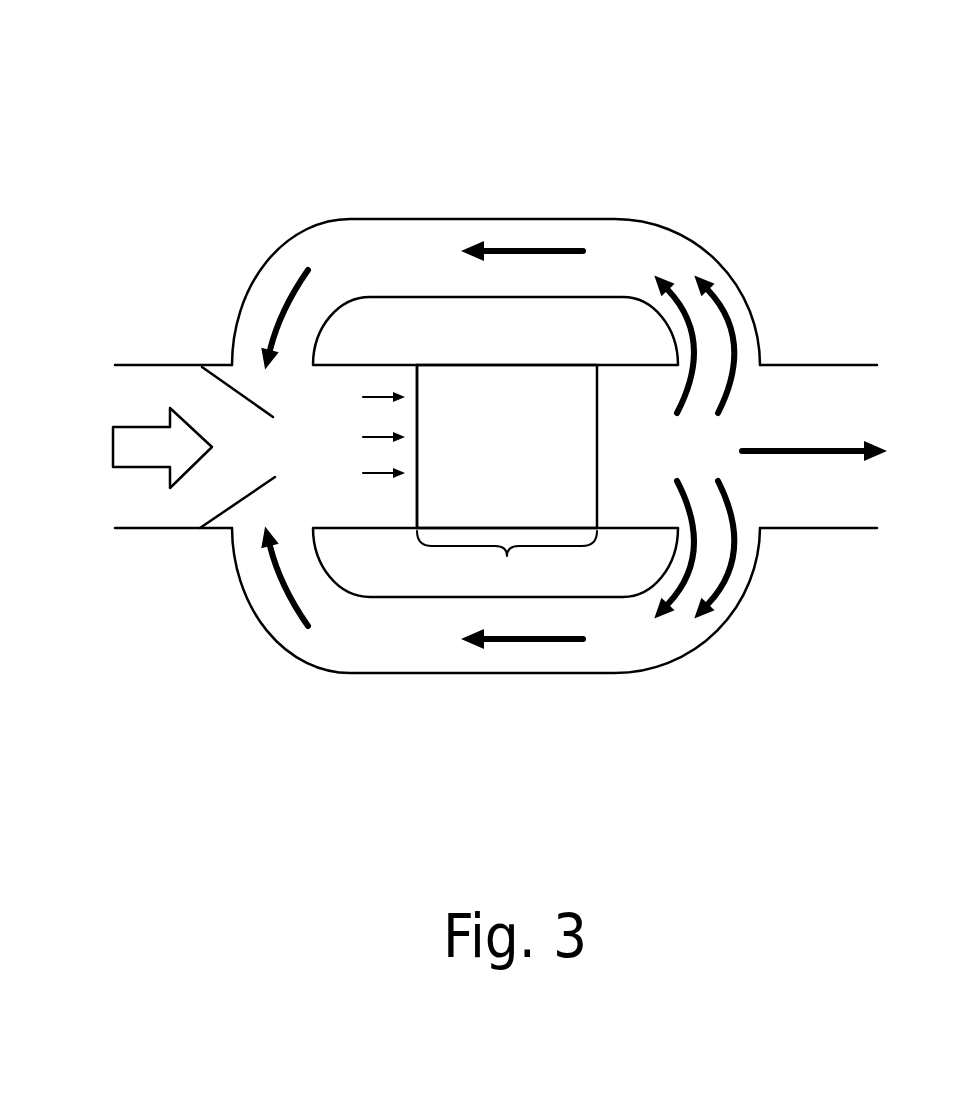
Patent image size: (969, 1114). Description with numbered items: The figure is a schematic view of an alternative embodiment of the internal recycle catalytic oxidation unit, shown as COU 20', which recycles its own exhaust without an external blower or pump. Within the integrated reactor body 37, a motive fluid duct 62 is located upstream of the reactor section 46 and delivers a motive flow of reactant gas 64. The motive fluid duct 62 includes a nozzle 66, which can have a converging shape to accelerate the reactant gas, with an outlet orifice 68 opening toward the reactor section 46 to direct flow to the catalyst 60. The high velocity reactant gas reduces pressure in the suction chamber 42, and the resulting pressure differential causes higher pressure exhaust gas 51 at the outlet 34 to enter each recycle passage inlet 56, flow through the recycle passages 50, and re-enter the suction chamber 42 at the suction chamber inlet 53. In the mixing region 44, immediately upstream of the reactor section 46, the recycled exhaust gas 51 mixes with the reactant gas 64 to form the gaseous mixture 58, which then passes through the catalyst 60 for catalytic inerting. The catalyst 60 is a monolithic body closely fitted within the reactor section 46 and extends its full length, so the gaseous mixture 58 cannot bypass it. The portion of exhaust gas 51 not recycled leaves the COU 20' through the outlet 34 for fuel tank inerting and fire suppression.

The internal recycle COU 20' is at (827, 67).
The outlet 34 is at (843, 365).
The integrated reactor body 37 is at (520, 365).
The suction chamber 42 is at (243, 537).
The mixing region 44 is at (387, 507).
The reactor section 46 is at (507, 560).
The recycle passages 50 is at (387, 218).
The exhaust gas 51 is at (820, 450).
The suction chamber inlet 53 is at (236, 364).
The recycle passage inlet 56 is at (762, 365).
The gaseous mixture 58 is at (370, 397).
The catalyst 60 is at (514, 475).
The motive fluid duct 62 is at (166, 365).
The reactant gas 64 is at (127, 467).
The nozzle 66 is at (230, 388).
The outlet orifice 68 is at (250, 453).